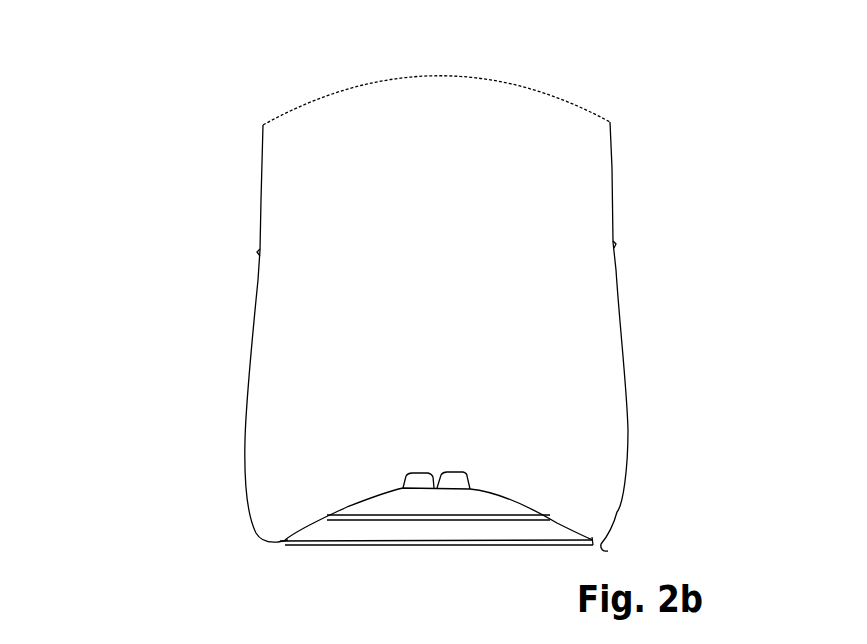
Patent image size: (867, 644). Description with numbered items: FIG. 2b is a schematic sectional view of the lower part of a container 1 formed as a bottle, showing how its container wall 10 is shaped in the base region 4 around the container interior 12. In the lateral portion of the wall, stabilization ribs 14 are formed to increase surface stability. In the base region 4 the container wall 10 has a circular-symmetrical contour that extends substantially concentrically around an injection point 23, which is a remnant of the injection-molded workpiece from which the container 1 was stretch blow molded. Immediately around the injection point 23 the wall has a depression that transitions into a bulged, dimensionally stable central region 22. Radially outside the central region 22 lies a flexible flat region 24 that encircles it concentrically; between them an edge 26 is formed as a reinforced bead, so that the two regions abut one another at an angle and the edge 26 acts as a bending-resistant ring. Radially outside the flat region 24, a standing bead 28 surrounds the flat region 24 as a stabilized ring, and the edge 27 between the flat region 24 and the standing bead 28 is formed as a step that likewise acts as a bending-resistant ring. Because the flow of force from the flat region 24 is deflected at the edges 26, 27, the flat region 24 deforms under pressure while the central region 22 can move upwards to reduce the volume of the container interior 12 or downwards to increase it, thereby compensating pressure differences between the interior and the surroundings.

The container 1 is at (207, 70).
The base region 4 is at (168, 491).
The container wall 10 is at (612, 168).
The container interior 12 is at (352, 174).
The stabilization ribs 14 is at (260, 255).
The central region 22 is at (377, 497).
The injection point 23 is at (438, 480).
The flat region 24 is at (303, 528).
The edge 26 is at (330, 522).
The edge 27 is at (592, 538).
The standing bead 28 is at (608, 551).